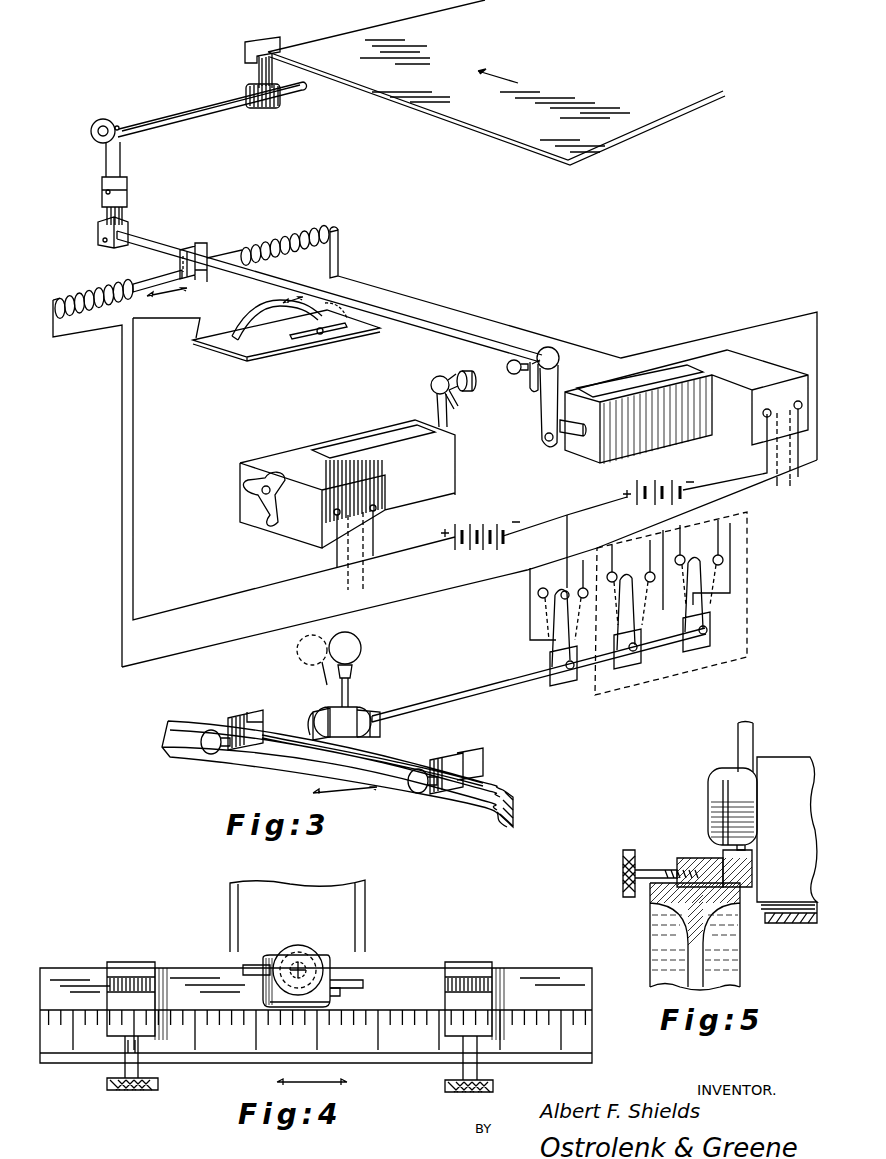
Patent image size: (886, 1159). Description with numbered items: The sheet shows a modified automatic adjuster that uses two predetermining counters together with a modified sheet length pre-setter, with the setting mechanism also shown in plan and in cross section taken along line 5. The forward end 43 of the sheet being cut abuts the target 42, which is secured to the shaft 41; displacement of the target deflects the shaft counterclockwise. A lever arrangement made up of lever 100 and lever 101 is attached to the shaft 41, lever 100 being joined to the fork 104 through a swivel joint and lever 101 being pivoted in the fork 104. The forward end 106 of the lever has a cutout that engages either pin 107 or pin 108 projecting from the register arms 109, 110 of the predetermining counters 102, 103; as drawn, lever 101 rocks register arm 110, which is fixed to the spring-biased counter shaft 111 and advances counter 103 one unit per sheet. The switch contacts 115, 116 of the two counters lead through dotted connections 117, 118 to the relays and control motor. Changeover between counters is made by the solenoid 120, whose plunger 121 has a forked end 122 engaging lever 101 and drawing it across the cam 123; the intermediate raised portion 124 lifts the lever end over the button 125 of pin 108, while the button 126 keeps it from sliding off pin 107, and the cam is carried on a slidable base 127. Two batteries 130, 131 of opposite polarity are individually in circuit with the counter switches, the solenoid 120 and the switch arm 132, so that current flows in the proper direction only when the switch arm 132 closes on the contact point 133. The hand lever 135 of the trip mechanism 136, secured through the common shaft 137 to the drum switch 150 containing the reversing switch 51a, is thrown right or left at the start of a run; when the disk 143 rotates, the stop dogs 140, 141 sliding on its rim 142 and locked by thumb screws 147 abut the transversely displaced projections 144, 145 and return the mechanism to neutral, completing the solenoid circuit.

In FIG. 3, the shaft 41 is at (239, 102).
In FIG. 3, the target 42 is at (246, 48).
In FIG. 3, the forward end of the sheet 43 is at (466, 118).
In FIG. 3, the reversing switch 51a is at (664, 678).
In FIG. 3, the lever 100 is at (121, 162).
In FIG. 3, the lever 101 is at (397, 329).
In FIG. 3, the predetermining counter 102 is at (448, 468).
In FIG. 3, the predetermining counter 103 is at (632, 450).
In FIG. 3, the fork 104 is at (129, 224).
In FIG. 3, the forward end of lever 106 is at (523, 386).
In FIG. 3, the pin 107 is at (467, 397).
In FIG. 3, the pin 108 is at (530, 384).
In FIG. 3, the register arm 109 is at (432, 400).
In FIG. 3, the register arm 110 is at (560, 374).
In FIG. 3, the counter shaft 111 is at (580, 434).
In FIG. 3, the switch contacts 115 is at (372, 507).
In FIG. 3, the switch contacts 116 is at (782, 433).
In FIG. 3, the dotted connections 117 is at (343, 570).
In FIG. 3, the dotted connections 118 is at (790, 469).
In FIG. 3, the solenoid 120 is at (85, 292).
In FIG. 3, the plunger 121 is at (143, 284).
In FIG. 3, the forked end 122 is at (201, 243).
In FIG. 3, the cam 123 is at (234, 344).
In FIG. 3, the intermediate raised portion 124 is at (270, 305).
In FIG. 3, the button 125 is at (510, 370).
In FIG. 3, the button 126 is at (460, 371).
In FIG. 3, the slidable base 127 is at (271, 350).
In FIG. 3, the battery 130 is at (489, 527).
In FIG. 3, the battery 131 is at (658, 478).
In FIG. 3, the switch arm 132 is at (555, 644).
In FIG. 3, the contact point 133 is at (567, 587).
In FIG. 3, the hand lever 135 is at (355, 636).
In FIG. 4, the hand lever 135 is at (298, 948).
In FIG. 3, the trip mechanism 136 is at (362, 700).
In FIG. 4, the trip mechanism 136 is at (340, 995).
In FIG. 5, the trip mechanism 136 is at (717, 797).
In FIG. 3, the common shaft 137 is at (430, 692).
In FIG. 3, the stop dog 140 is at (250, 712).
In FIG. 4, the stop dog 140 is at (125, 967).
In FIG. 5, the stop dog 140 is at (725, 853).
In FIG. 3, the stop dog 141 is at (483, 758).
In FIG. 4, the stop dog 141 is at (483, 963).
In FIG. 5, the stop dog 141 is at (703, 858).
In FIG. 3, the rim 142 is at (518, 800).
In FIG. 4, the rim 142 is at (593, 1022).
In FIG. 5, the rim 142 is at (653, 897).
In FIG. 3, the disk 143 is at (337, 774).
In FIG. 4, the disk 143 is at (405, 1067).
In FIG. 5, the disk 143 is at (682, 973).
In FIG. 3, the projection 144 is at (317, 715).
In FIG. 4, the projection 144 is at (243, 968).
In FIG. 3, the projection 145 is at (377, 732).
In FIG. 4, the projection 145 is at (357, 983).
In FIG. 3, the thumb screw 147 is at (212, 748).
In FIG. 4, the thumb screw 147 is at (155, 1088).
In FIG. 5, the thumb screw 147 is at (623, 864).
In FIG. 4, the drum switch 150 is at (300, 913).
In FIG. 5, the drum switch 150 is at (797, 811).
In FIG. 4, the section line 5 is at (468, 950).